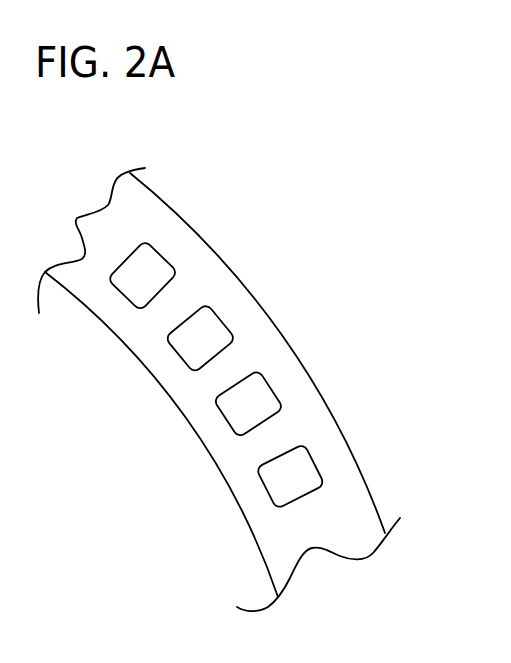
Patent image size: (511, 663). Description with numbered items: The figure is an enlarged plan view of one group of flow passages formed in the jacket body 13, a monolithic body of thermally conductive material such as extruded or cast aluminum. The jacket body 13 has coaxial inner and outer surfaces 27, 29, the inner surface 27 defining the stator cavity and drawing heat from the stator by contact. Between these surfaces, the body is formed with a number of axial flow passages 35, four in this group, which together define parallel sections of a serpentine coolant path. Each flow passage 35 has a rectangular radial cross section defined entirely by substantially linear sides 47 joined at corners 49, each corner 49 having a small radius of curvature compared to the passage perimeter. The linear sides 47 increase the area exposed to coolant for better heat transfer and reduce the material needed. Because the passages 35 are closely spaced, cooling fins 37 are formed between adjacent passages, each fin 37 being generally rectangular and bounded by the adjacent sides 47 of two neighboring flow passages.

The jacket body 13 is at (260, 376).
The flow passage 35 is at (145, 292).
The substantially linear side 47 is at (158, 292).
The corner 49 is at (235, 338).
The cooling fin 37 is at (222, 373).
The inner surface 27 is at (237, 505).
The outer surface 29 is at (360, 462).